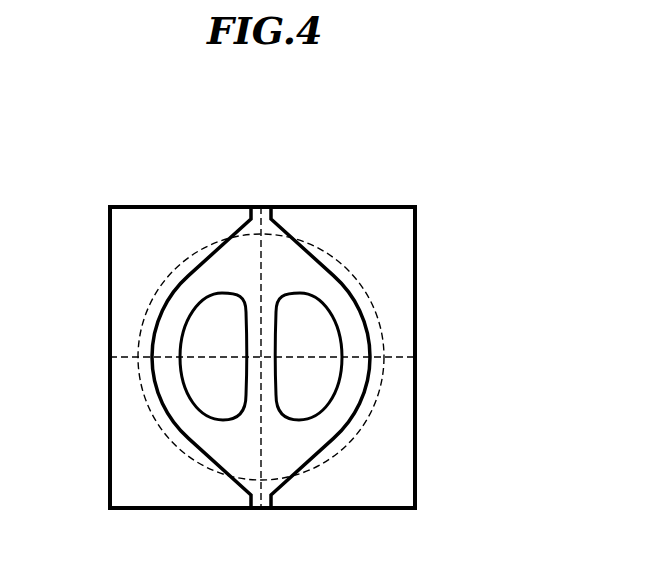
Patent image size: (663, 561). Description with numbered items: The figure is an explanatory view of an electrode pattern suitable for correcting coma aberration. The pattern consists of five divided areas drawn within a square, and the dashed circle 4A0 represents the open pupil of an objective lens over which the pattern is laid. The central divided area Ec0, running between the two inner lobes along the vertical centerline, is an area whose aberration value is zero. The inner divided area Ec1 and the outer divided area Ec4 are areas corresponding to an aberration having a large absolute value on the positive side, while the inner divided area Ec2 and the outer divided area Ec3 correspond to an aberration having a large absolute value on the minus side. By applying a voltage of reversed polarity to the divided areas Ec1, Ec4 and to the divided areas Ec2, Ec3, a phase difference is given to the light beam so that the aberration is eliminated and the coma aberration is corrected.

The divided area Ec0 is at (283, 243).
The divided area Ec1 is at (222, 305).
The divided area Ec2 is at (322, 328).
The divided area Ec3 is at (128, 468).
The divided area Ec4 is at (392, 453).
The open pupil of objective lens 4A0 is at (378, 312).